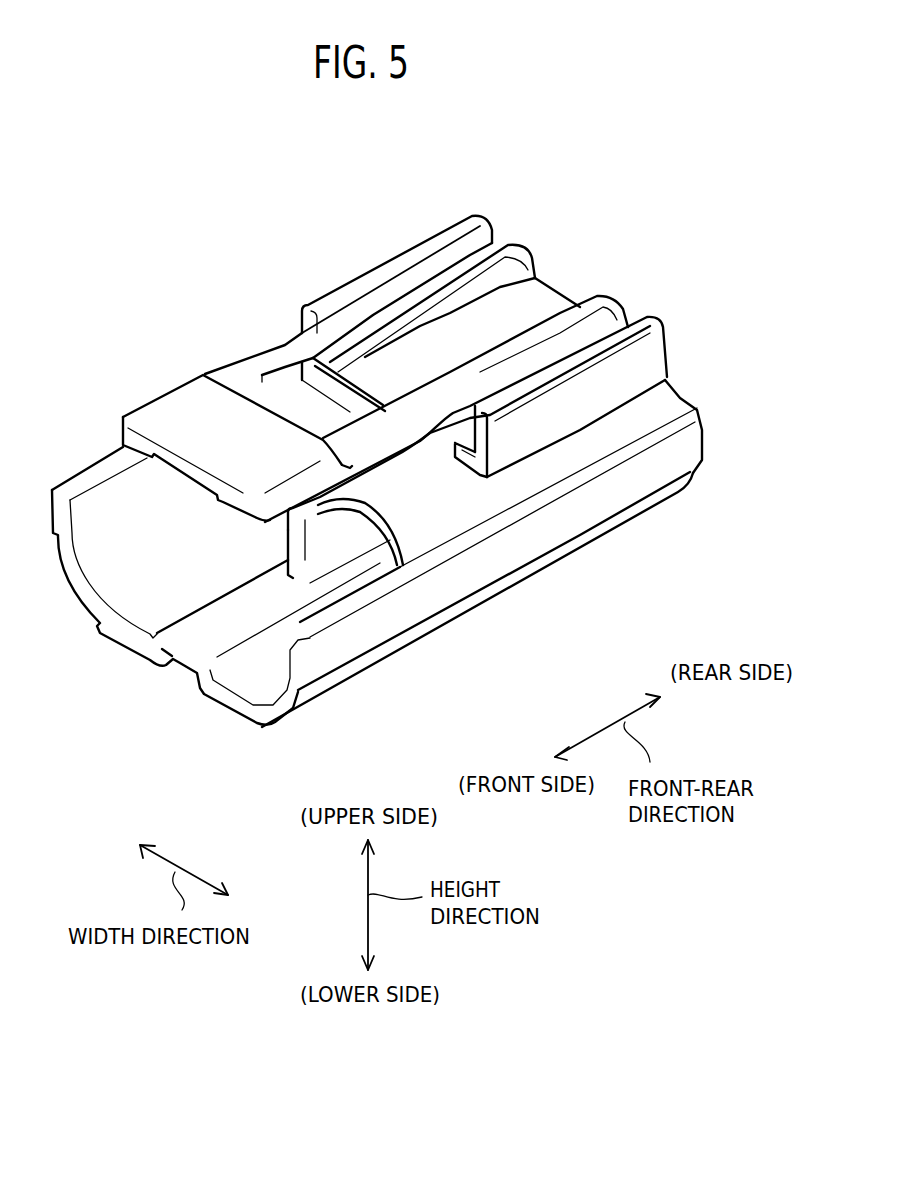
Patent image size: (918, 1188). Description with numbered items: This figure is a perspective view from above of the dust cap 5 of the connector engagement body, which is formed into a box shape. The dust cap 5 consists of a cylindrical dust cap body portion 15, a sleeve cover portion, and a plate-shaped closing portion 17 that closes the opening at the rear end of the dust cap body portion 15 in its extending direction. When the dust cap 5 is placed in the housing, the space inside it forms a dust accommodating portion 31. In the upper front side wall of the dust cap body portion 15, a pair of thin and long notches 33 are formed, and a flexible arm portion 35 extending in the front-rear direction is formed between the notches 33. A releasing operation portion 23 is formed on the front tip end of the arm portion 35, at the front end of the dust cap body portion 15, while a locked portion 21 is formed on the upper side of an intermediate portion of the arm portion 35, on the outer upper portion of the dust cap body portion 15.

The dust cap 5 is at (533, 574).
The dust cap body portion 15 is at (590, 507).
The closing portion 17 is at (653, 407).
The locked portion 21 is at (333, 398).
The releasing operation portion 23 is at (162, 420).
The dust accommodating portion 31 is at (612, 435).
The notches 33 is at (288, 370).
The arm portion 35 is at (290, 410).